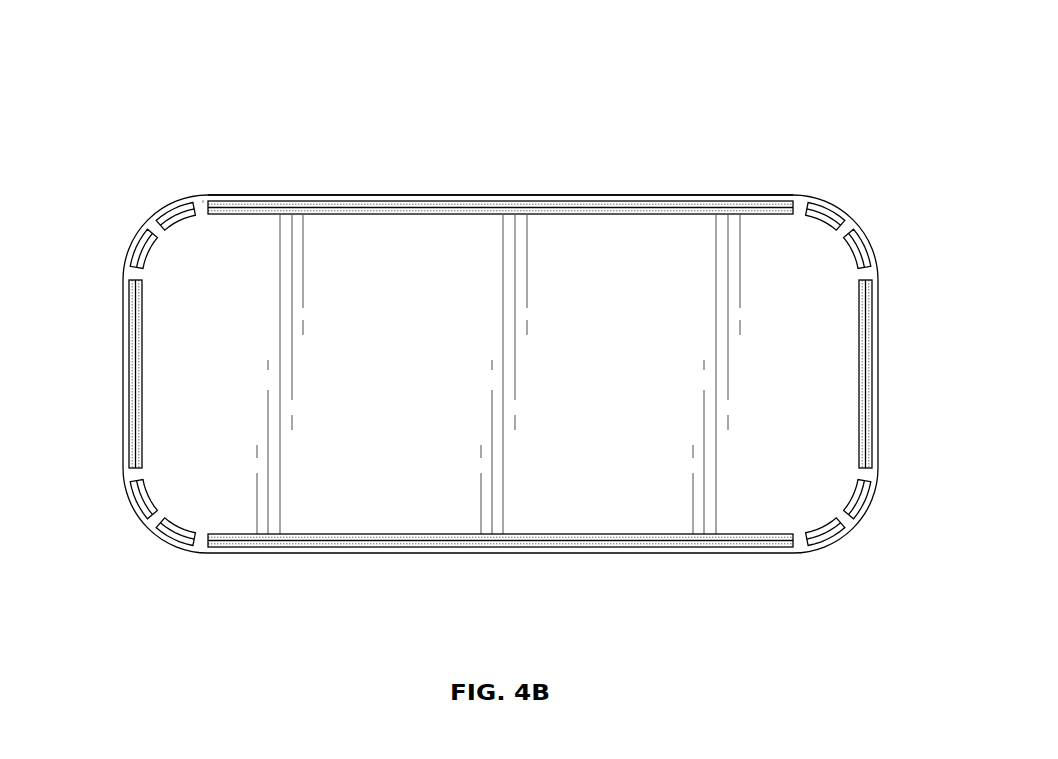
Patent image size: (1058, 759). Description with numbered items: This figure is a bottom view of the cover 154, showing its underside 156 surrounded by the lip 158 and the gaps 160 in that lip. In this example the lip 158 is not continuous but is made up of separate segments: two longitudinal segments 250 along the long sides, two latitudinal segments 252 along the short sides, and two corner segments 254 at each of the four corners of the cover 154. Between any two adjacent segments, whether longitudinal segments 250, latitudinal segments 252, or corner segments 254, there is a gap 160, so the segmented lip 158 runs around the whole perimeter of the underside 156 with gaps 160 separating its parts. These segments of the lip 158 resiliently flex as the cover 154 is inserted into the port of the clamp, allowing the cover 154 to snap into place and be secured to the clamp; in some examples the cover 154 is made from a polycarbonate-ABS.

The cover 154 is at (132, 75).
The underside 156 is at (590, 268).
The lip 158 is at (282, 200).
The gap 160 is at (152, 222).
The longitudinal segment 250 is at (132, 352).
The latitudinal segment 252 is at (692, 205).
The corner segment 254 is at (188, 200).